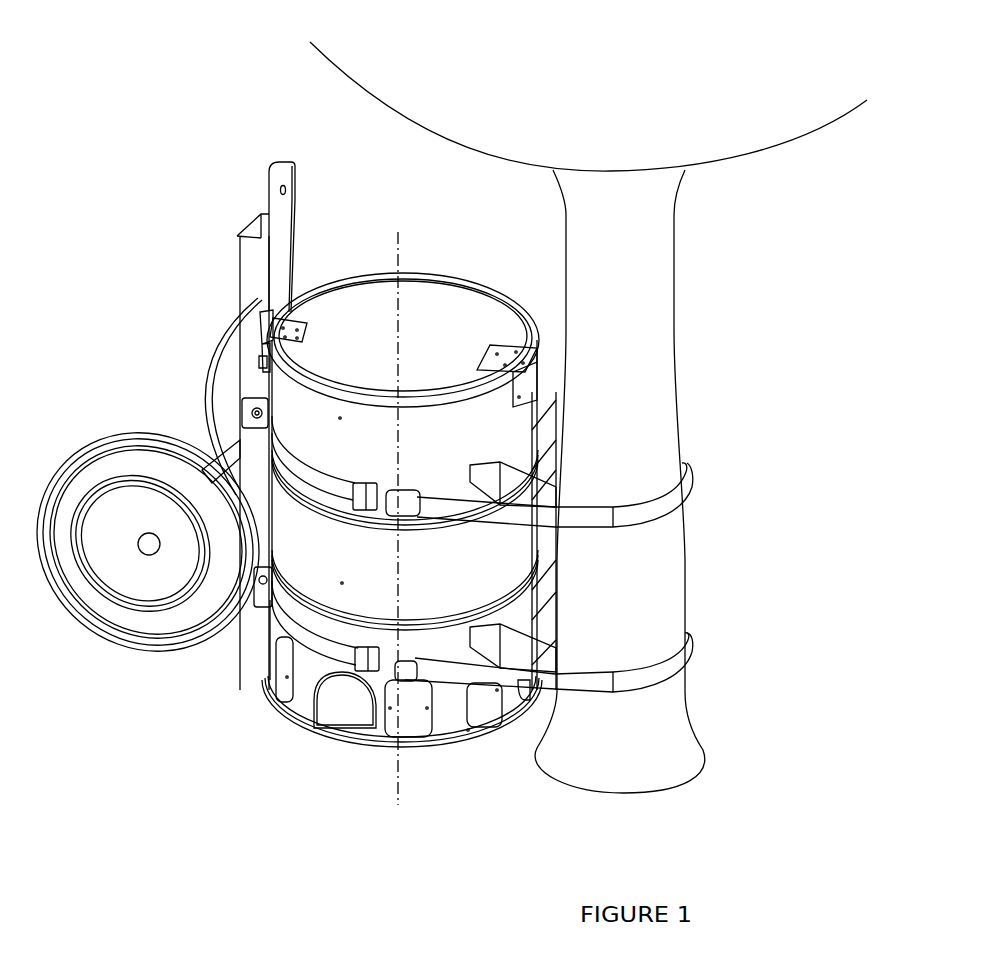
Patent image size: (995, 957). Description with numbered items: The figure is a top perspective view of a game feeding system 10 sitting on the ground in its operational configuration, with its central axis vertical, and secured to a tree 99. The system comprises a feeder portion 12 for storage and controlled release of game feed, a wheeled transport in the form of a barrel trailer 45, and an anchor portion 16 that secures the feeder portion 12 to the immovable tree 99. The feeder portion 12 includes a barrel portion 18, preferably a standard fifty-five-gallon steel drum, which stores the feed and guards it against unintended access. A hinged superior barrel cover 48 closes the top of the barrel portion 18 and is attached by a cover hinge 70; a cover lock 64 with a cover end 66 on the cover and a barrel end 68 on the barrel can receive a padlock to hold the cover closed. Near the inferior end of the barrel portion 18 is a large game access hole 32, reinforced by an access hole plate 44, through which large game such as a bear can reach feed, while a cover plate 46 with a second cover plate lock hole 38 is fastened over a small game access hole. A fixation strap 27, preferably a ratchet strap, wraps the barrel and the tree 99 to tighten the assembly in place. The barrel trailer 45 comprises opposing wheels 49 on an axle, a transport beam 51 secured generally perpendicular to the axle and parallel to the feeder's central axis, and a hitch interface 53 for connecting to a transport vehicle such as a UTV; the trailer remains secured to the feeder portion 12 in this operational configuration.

The game feeding system 10 is at (121, 95).
The feeder portion 12 is at (490, 262).
The anchor portion 16 is at (566, 496).
The barrel portion 18 is at (292, 740).
The fixation strap 27 is at (585, 682).
The large game access hole 32 is at (344, 716).
The second cover plate lock hole 38 is at (470, 702).
The access hole plate 44 is at (373, 732).
The barrel trailer 45 is at (152, 404).
The cover plate 46 is at (488, 724).
The superior barrel cover 48 is at (374, 299).
The wheel 49 is at (82, 448).
The transport beam 51 is at (236, 278).
The hitch interface 53 is at (276, 168).
The cover lock 64 is at (258, 322).
The cover end 66 is at (305, 330).
The barrel end 68 is at (258, 362).
The cover hinge 70 is at (546, 362).
The tree 99 is at (690, 571).